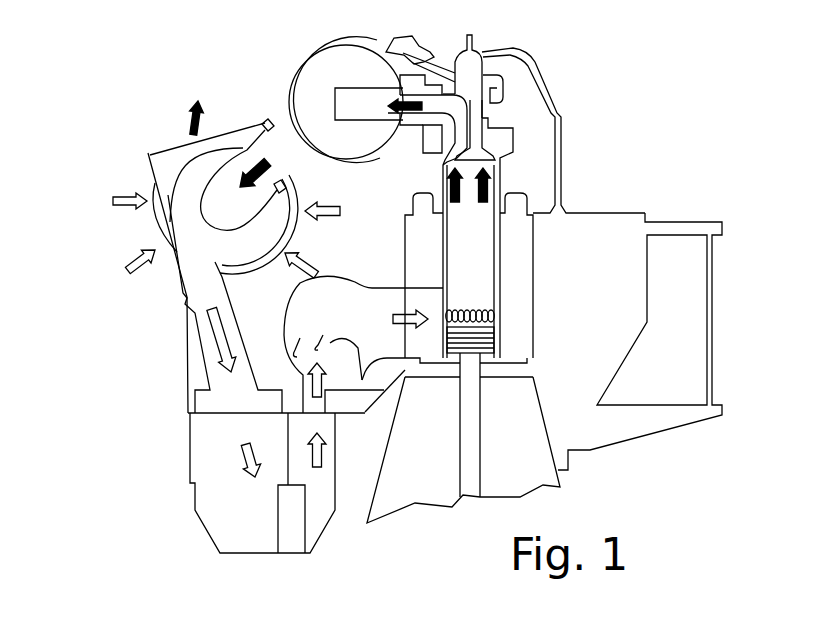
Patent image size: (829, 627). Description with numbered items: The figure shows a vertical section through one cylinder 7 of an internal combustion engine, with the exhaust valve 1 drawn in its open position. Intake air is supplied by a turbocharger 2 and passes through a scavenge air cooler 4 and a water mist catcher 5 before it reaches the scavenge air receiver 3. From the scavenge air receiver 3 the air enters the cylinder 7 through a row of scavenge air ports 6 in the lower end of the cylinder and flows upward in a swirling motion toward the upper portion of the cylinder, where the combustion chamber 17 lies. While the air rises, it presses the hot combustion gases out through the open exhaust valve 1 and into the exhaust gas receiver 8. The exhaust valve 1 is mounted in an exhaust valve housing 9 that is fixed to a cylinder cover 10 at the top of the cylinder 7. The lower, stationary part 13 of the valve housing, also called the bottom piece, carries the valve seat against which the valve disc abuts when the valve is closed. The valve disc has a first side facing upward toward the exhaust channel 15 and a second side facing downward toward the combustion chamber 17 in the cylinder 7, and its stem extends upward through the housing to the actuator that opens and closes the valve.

The exhaust valve 1 is at (468, 158).
The turbocharger 2 is at (132, 160).
The scavenge air receiver 3 is at (334, 297).
The scavenge air cooler 4 is at (243, 520).
The water mist catcher 5 is at (288, 540).
The scavenge air ports 6 is at (461, 306).
The cylinder 7 is at (500, 268).
The exhaust gas receiver 8 is at (303, 80).
The exhaust valve housing 9 is at (463, 55).
The cylinder cover 10 is at (433, 145).
The stationary part 13 is at (485, 148).
The exhaust channel 15 is at (477, 130).
The combustion chamber 17 is at (478, 240).